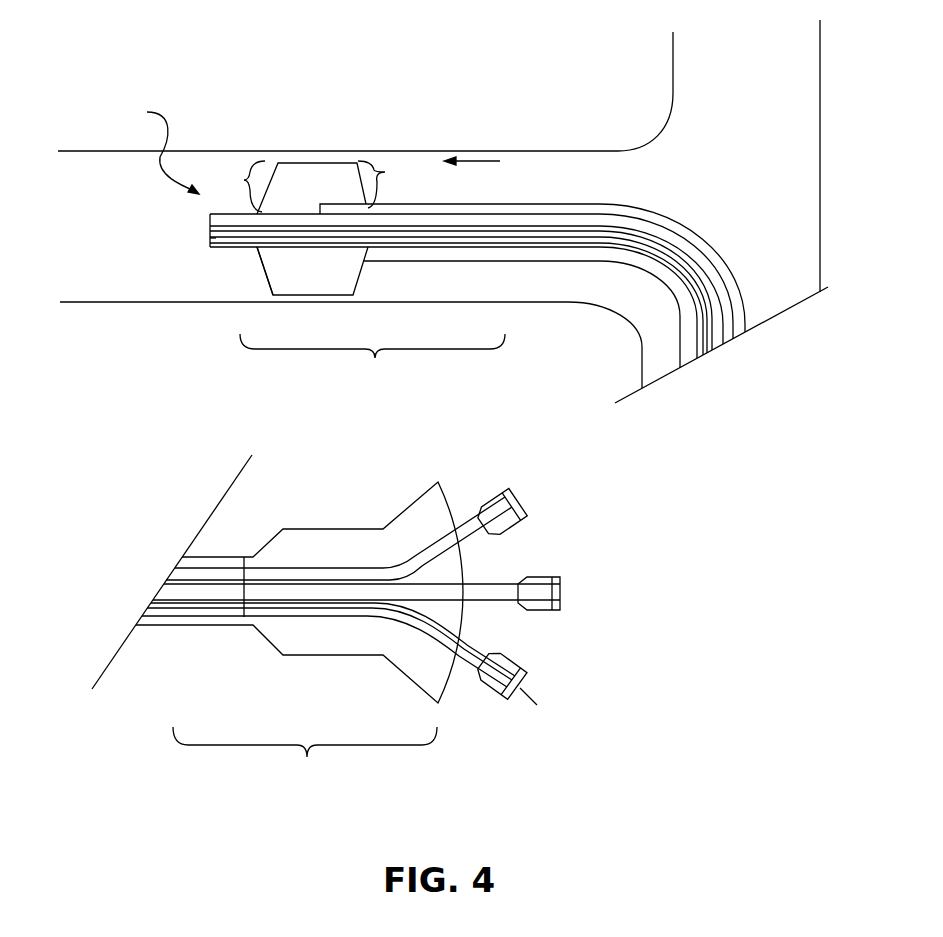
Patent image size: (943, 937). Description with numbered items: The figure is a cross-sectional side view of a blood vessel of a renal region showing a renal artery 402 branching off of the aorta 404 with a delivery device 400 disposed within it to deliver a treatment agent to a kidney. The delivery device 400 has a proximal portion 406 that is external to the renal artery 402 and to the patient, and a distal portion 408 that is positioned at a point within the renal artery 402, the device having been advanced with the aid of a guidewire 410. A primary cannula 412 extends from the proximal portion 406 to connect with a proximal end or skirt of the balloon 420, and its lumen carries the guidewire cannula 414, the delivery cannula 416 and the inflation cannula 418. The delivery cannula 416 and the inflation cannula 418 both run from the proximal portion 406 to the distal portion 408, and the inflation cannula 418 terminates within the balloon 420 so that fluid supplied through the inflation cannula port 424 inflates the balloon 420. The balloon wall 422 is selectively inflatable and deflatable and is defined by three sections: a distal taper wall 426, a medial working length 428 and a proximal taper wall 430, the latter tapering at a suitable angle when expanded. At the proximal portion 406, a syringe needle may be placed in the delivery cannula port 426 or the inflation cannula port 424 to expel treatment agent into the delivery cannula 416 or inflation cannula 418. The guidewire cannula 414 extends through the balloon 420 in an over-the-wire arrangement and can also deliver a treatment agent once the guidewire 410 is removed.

The delivery device 400 is at (156, 148).
The renal artery 402 is at (530, 151).
The aorta 404 is at (672, 58).
The proximal portion 406 is at (305, 756).
The distal portion 408 is at (372, 363).
The guidewire 410 is at (211, 236).
The primary cannula 412 is at (535, 200).
The guidewire cannula 414 is at (530, 252).
The delivery cannula 416 is at (595, 231).
The inflation cannula 418 is at (440, 210).
The balloon 420 is at (352, 278).
The balloon wall 422 is at (262, 261).
The inflation cannula port 424 is at (526, 494).
The delivery cannula port 426 is at (565, 586).
The medial working length 428 is at (278, 160).
The proximal taper wall 430 is at (388, 183).